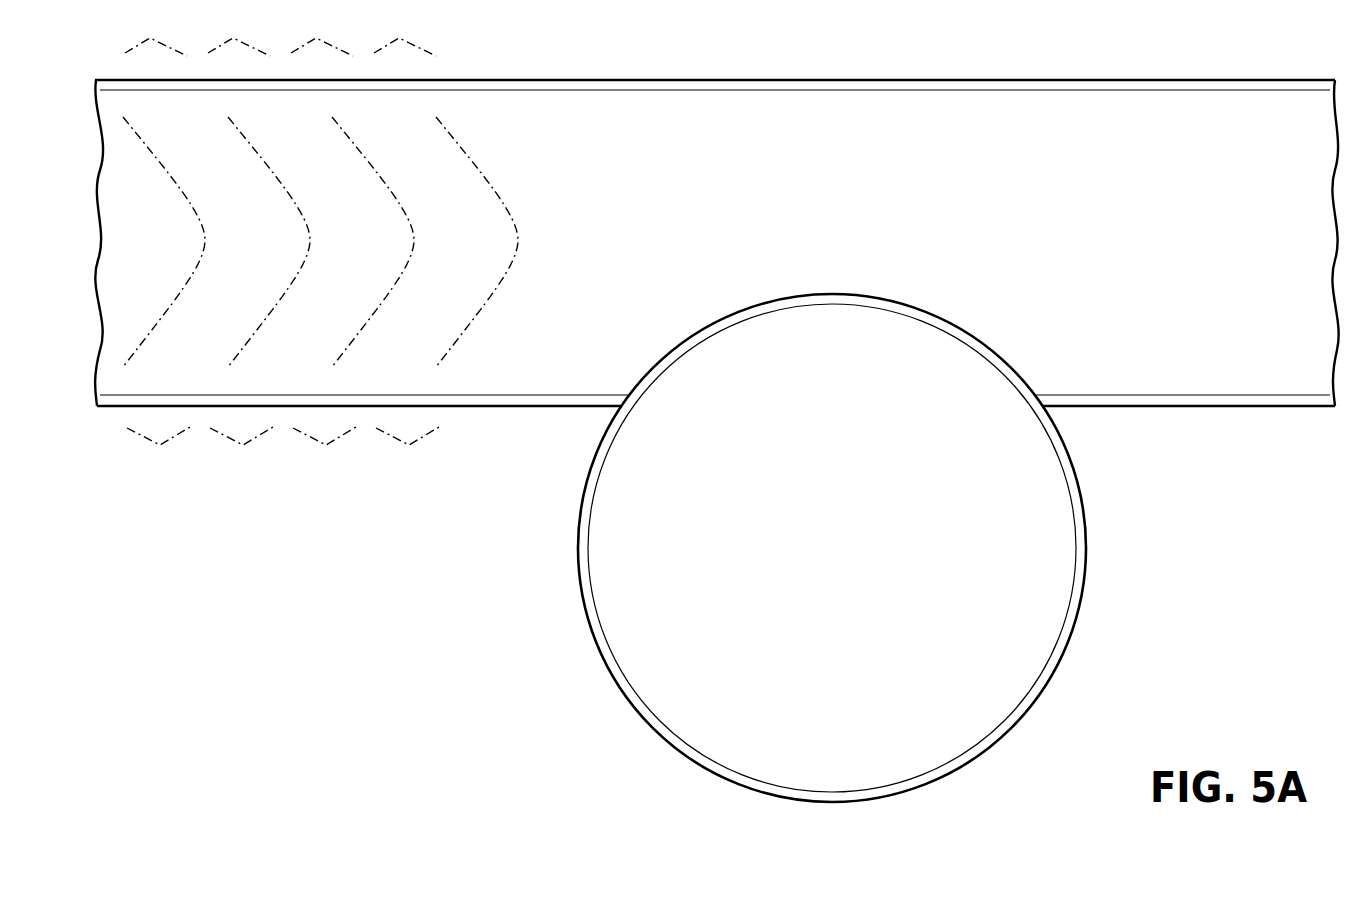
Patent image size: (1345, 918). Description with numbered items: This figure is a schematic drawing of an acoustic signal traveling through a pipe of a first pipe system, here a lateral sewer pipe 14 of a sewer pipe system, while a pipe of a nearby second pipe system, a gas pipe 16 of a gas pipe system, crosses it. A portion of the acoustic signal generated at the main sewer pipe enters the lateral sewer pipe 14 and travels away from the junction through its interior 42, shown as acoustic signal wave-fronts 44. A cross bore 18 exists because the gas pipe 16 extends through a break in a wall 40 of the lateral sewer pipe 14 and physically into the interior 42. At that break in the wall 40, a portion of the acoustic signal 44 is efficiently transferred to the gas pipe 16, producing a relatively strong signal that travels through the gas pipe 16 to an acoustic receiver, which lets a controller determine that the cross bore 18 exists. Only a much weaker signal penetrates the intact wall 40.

The lateral sewer pipe 14 is at (1065, 79).
The gas pipe 16 is at (1086, 552).
The cross bore 18 is at (1005, 346).
The wall 40 is at (594, 395).
The interior 42 is at (1246, 252).
The acoustic signal wave-fronts 44 is at (483, 177).